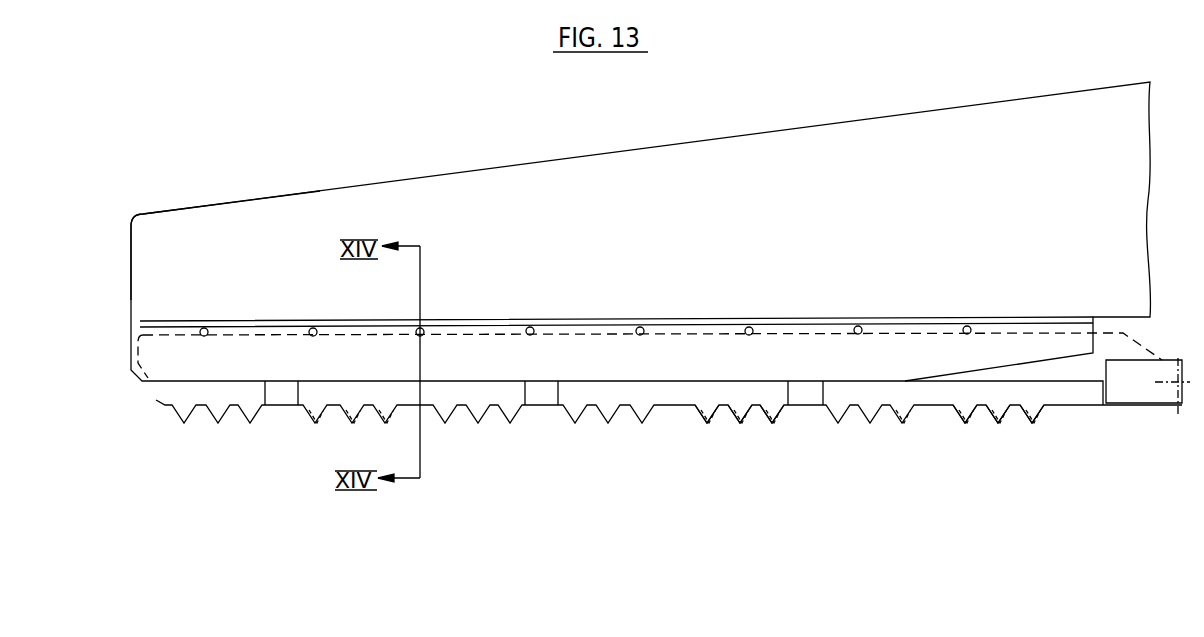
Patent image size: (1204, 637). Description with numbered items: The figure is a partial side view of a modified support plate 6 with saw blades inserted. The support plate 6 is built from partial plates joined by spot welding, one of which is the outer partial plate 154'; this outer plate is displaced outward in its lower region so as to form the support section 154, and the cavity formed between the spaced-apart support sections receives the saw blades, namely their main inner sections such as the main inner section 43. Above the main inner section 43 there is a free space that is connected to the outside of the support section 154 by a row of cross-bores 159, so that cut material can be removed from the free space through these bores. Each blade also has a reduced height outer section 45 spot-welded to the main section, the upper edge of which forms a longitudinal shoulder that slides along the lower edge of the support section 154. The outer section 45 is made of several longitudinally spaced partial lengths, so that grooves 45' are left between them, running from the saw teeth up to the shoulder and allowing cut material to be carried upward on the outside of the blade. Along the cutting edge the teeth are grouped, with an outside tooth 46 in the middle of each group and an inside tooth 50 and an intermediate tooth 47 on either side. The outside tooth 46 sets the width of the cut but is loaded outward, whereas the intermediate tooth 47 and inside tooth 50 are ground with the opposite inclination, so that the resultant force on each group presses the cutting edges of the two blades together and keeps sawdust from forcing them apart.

The support plate 6 is at (300, 194).
The main inner section 43 is at (1060, 368).
The reduced height outer section 45 is at (669, 467).
The grooves or channels 45' is at (544, 468).
The outside tooth 46 is at (743, 410).
The intermediate tooth 47 is at (772, 405).
The inside tooth 50 is at (707, 422).
The support section 154 is at (160, 444).
The outer partial plate 154' is at (225, 204).
The cross-bore 159 is at (205, 336).